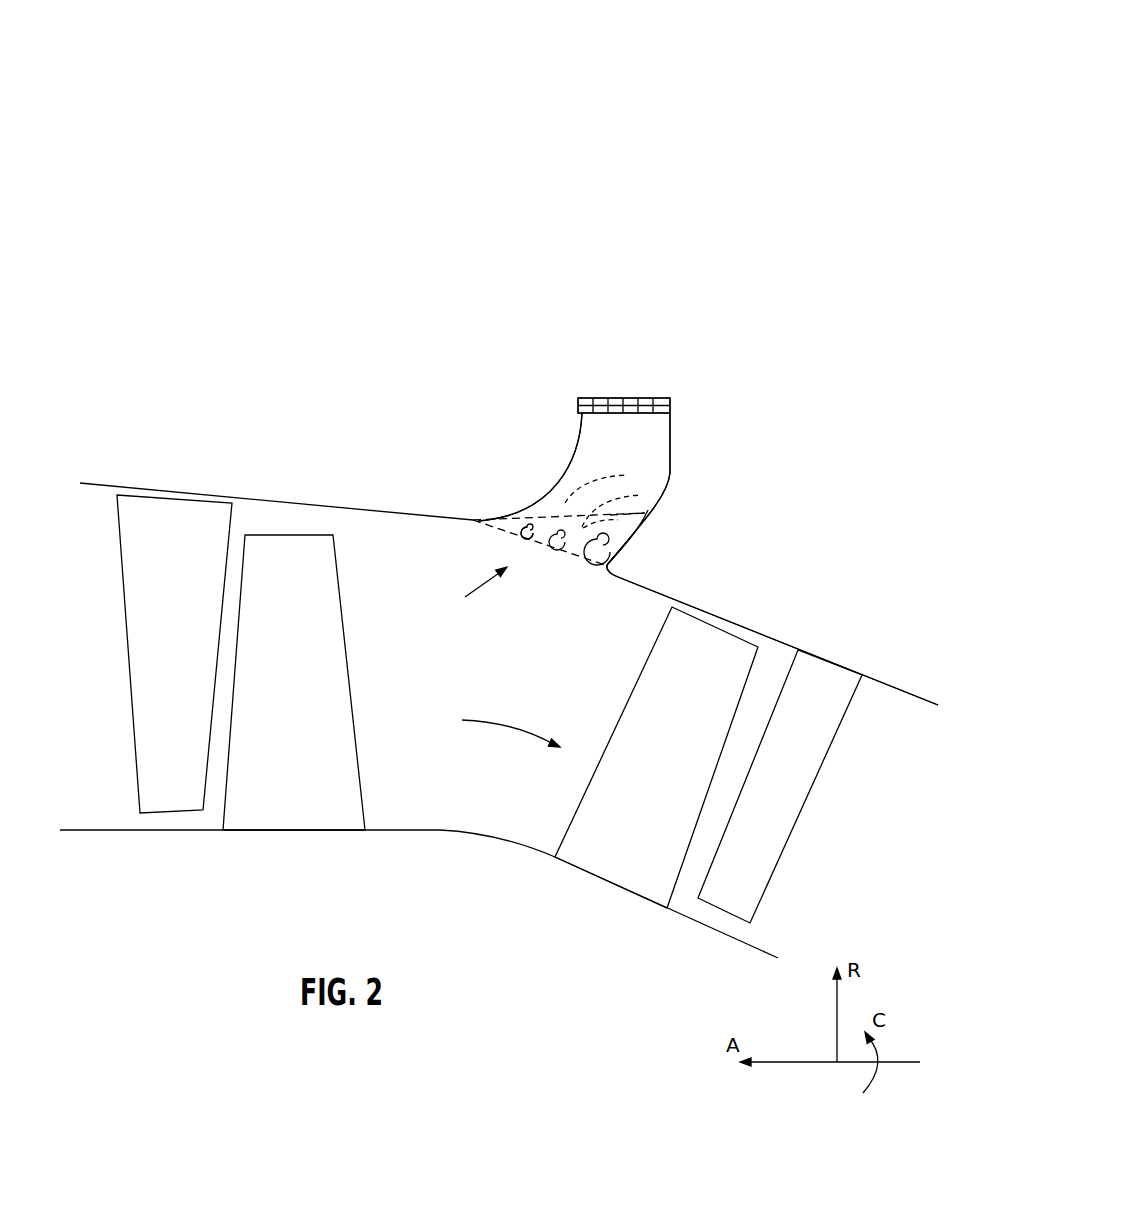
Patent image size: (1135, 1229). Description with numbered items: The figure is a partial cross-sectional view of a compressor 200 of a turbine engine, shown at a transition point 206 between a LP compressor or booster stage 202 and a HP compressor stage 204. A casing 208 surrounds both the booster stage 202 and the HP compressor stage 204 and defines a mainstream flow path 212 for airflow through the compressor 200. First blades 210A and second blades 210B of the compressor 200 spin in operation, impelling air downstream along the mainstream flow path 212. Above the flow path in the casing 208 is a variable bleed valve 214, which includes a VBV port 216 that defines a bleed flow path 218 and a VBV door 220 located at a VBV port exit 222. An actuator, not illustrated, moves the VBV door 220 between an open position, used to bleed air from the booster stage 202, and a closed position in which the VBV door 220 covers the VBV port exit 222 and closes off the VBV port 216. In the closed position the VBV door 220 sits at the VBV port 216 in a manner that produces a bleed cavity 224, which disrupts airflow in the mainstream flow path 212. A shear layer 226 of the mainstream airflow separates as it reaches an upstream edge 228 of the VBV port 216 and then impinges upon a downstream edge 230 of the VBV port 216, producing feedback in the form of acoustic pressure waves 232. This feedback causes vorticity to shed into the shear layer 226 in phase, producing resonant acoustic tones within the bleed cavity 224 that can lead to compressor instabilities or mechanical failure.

The compressor 200 is at (760, 86).
The LP compressor (booster) stage 202 is at (194, 383).
The HP compressor stage 204 is at (837, 512).
The transition point 206 is at (750, 477).
The casing 208 is at (295, 507).
The first blades 210A is at (290, 807).
The second blades 210B is at (612, 872).
The mainstream flow path 212 is at (483, 720).
The variable bleed valve 214 is at (675, 292).
The VBV port 216 is at (682, 414).
The bleed flow path 218 is at (460, 589).
The VBV door 220 is at (620, 403).
The VBV port exit 222 is at (583, 413).
The bleed cavity 224 is at (641, 462).
The shear layer 226 is at (633, 538).
The upstream edge 228 is at (475, 520).
The downstream edge 230 is at (603, 567).
The acoustic pressure waves 232 is at (643, 514).